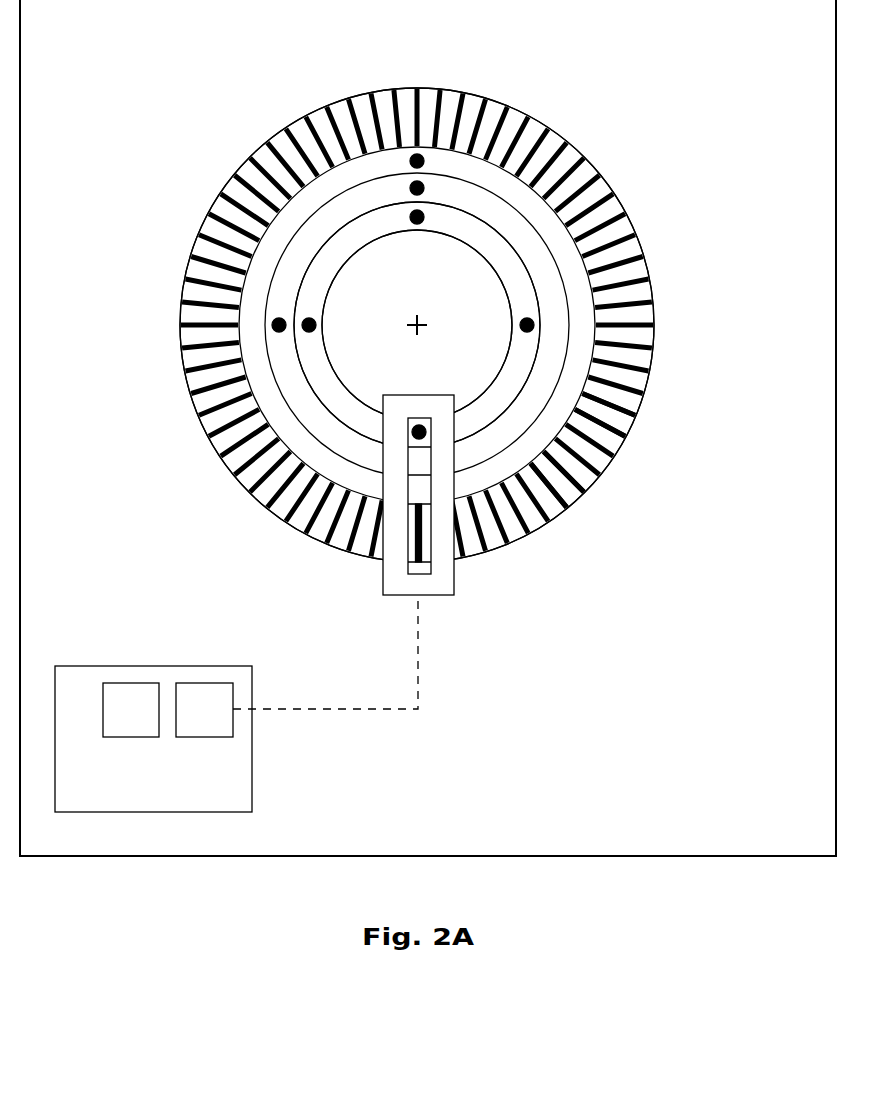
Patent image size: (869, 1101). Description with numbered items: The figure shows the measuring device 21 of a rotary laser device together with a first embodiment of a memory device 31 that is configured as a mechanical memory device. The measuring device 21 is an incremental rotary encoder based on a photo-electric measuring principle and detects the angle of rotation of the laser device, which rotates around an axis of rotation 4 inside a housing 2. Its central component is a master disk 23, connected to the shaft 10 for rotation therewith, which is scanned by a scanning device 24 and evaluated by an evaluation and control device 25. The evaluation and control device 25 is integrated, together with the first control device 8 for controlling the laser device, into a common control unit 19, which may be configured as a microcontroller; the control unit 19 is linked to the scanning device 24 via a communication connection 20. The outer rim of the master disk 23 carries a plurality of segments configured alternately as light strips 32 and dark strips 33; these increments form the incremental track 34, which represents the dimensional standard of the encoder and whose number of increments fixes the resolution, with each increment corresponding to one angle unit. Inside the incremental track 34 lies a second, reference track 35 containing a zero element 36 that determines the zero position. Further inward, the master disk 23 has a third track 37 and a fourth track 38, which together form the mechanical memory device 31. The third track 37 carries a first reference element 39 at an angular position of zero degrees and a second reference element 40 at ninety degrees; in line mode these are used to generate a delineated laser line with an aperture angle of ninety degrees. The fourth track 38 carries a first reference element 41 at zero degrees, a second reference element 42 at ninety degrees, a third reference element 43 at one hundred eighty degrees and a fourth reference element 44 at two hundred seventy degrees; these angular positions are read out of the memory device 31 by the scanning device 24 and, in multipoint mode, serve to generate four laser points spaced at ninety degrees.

The housing 2 is at (768, 855).
The axis of rotation 4 is at (424, 318).
The first control device 8 is at (124, 727).
The shaft 10 is at (338, 378).
The control unit 19 is at (76, 684).
The communication connection 20 is at (315, 712).
The measuring device 21 is at (220, 102).
The master disk 23 is at (205, 222).
The scanning device 24 is at (444, 567).
The evaluation and control device 25 is at (190, 727).
The memory device 31 is at (340, 434).
The light strip 32 is at (607, 439).
The dark strip 33 is at (560, 517).
The incremental track 34 is at (642, 338).
The reference track 35 is at (514, 191).
The zero element 36 is at (417, 154).
The third track 37 is at (524, 241).
The fourth track 38 is at (519, 291).
The first reference element 39 is at (413, 181).
The second reference element 40 is at (272, 327).
The first reference element 41 is at (417, 224).
The second reference element 42 is at (317, 325).
The third reference element 43 is at (418, 425).
The fourth reference element 44 is at (519, 325).